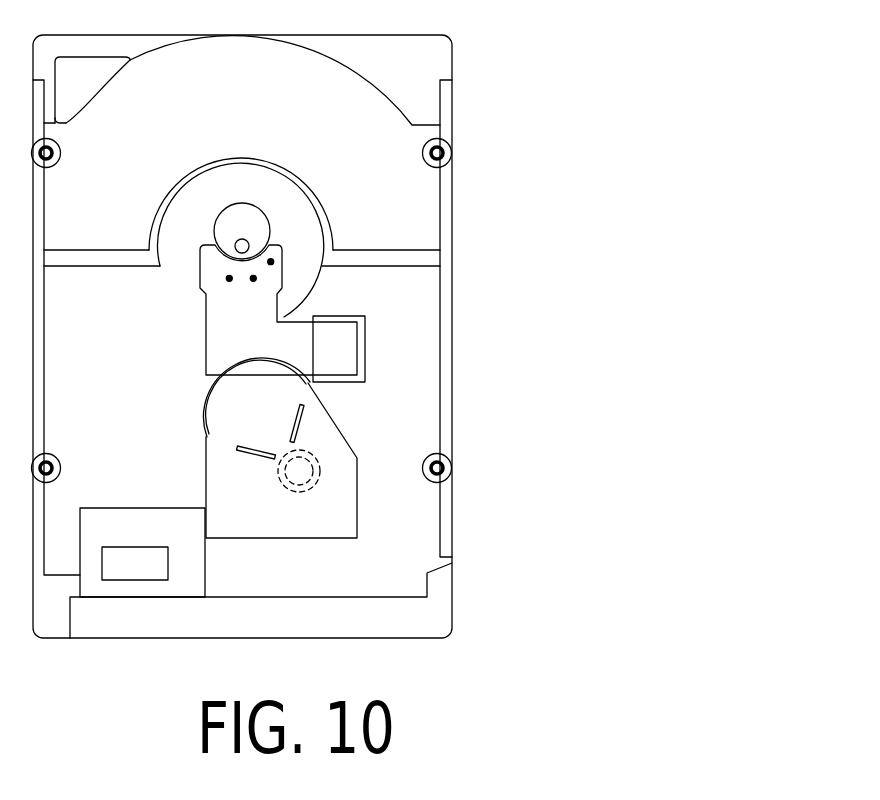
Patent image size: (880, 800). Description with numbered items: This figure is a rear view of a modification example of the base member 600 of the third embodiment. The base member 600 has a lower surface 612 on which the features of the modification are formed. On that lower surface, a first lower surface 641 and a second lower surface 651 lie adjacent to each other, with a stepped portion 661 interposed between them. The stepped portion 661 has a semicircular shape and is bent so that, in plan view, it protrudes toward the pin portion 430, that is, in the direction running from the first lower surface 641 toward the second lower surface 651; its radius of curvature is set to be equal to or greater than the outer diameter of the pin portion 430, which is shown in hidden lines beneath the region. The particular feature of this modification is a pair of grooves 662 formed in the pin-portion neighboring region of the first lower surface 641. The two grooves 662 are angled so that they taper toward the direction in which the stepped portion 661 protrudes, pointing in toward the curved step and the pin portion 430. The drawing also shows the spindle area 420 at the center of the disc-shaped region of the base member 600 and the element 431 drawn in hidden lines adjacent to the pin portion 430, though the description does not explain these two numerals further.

The base member 600 is at (485, 85).
The lower surface 612 is at (147, 336).
The spindle motor 420 is at (246, 243).
The first lower surface 641 is at (228, 397).
The stepped portion 661 is at (243, 476).
The pair of grooves 662 is at (296, 438).
The second lower surface 651 is at (337, 462).
The pin portion 430 is at (285, 492).
The bearing 431 is at (312, 487).